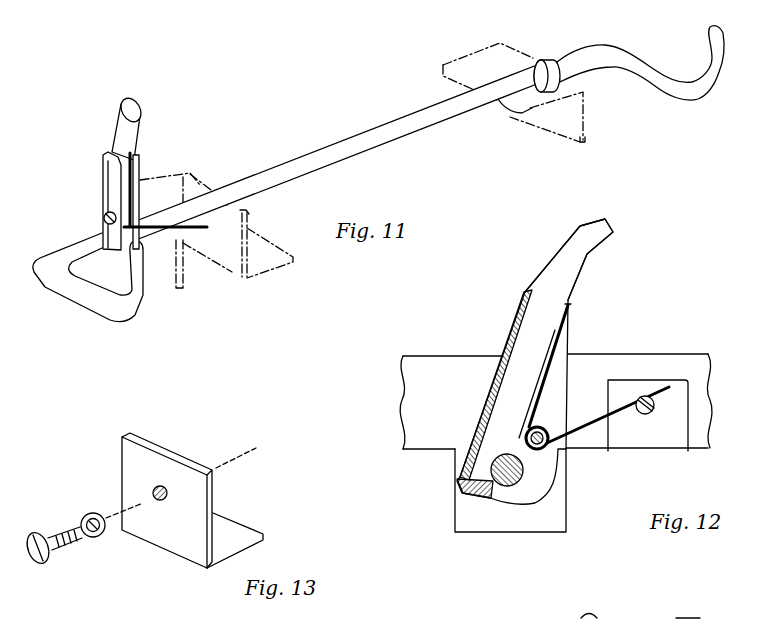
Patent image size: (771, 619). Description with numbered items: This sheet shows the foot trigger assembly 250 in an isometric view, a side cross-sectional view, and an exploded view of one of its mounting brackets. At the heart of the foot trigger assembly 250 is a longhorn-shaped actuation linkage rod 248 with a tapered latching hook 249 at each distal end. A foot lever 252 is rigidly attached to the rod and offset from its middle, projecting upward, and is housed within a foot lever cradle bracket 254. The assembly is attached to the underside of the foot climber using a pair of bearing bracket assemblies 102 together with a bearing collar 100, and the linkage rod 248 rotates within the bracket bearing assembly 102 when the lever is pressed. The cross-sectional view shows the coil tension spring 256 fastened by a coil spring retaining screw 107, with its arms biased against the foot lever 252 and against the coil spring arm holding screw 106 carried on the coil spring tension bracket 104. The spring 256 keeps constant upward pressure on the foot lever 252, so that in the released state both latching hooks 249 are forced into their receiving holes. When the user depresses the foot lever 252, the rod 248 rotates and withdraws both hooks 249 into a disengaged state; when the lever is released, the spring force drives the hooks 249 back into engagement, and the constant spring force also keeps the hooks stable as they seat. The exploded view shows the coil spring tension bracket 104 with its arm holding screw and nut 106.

In FIG. 11, the bearing collar 100 is at (551, 61).
In FIG. 11, the actuation linkage bearing bracket assembly 102 is at (186, 290).
In FIG. 12, the actuation linkage bearing bracket assembly 102 is at (452, 520).
In FIG. 11, the coil spring tension bracket 104 is at (280, 275).
In FIG. 12, the coil spring tension bracket 104 is at (627, 453).
In FIG. 13, the coil spring tension bracket 104 is at (260, 532).
In FIG. 12, the coil spring arm holding screw 106 is at (650, 416).
In FIG. 13, the coil spring arm holding screw 106 is at (53, 563).
In FIG. 11, the coil spring retaining screw 107 is at (102, 221).
In FIG. 12, the coil spring retaining screw 107 is at (560, 450).
In FIG. 11, the actuation linkage rod 248 is at (413, 138).
In FIG. 12, the actuation linkage rod 248 is at (455, 483).
In FIG. 11, the latching hooks 249 is at (128, 256).
In FIG. 11, the foot trigger assembly 250 is at (307, 113).
In FIG. 12, the foot trigger assembly 250 is at (663, 300).
In FIG. 11, the foot lever 252 is at (139, 104).
In FIG. 12, the foot lever 252 is at (570, 241).
In FIG. 11, the foot lever cradle bracket 254 is at (102, 175).
In FIG. 12, the foot lever cradle bracket 254 is at (518, 310).
In FIG. 11, the coil tension spring 256 is at (137, 157).
In FIG. 12, the coil tension spring 256 is at (570, 316).